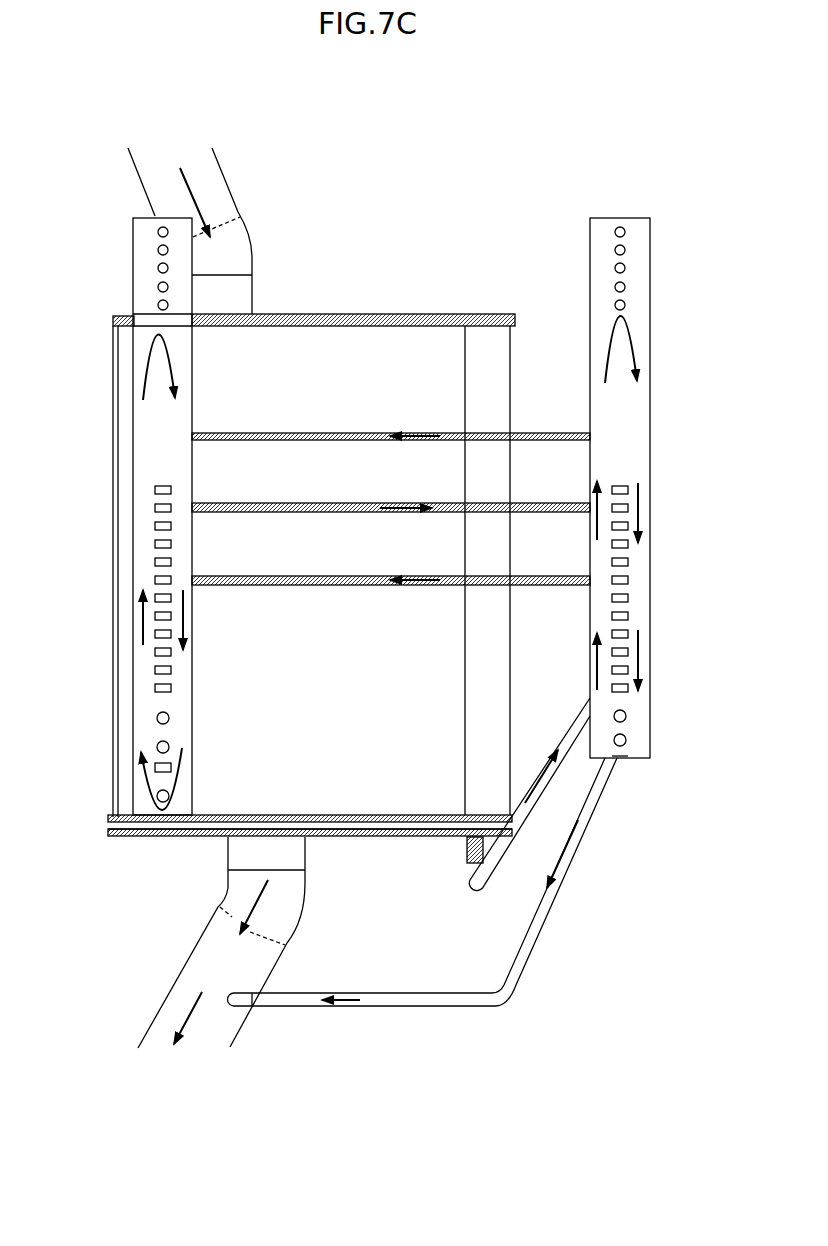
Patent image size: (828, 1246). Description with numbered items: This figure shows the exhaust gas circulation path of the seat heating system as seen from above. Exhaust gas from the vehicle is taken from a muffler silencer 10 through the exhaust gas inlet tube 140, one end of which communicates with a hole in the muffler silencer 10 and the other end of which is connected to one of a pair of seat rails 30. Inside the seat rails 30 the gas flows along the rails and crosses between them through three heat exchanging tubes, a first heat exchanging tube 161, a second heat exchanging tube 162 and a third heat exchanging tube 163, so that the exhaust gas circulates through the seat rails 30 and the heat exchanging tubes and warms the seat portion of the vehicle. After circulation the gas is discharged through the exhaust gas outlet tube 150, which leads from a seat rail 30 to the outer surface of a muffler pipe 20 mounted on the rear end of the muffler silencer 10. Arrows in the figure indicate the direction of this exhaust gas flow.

The muffler silencer 10 is at (113, 553).
The muffler pipe 20 is at (210, 945).
The seat rail 30 is at (153, 452).
The exhaust gas inlet tube 140 is at (540, 787).
The exhaust gas outlet tube 150 is at (530, 938).
The first heat exchanging tube 161 is at (297, 585).
The second heat exchanging tube 162 is at (297, 512).
The third heat exchanging tube 163 is at (297, 440).